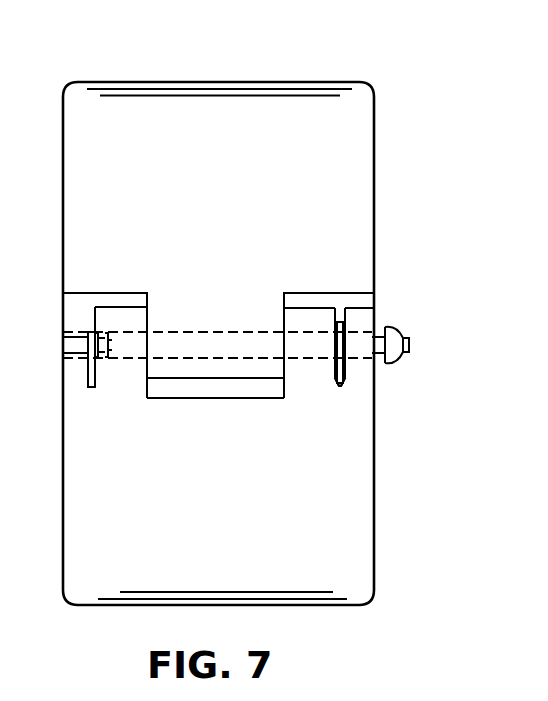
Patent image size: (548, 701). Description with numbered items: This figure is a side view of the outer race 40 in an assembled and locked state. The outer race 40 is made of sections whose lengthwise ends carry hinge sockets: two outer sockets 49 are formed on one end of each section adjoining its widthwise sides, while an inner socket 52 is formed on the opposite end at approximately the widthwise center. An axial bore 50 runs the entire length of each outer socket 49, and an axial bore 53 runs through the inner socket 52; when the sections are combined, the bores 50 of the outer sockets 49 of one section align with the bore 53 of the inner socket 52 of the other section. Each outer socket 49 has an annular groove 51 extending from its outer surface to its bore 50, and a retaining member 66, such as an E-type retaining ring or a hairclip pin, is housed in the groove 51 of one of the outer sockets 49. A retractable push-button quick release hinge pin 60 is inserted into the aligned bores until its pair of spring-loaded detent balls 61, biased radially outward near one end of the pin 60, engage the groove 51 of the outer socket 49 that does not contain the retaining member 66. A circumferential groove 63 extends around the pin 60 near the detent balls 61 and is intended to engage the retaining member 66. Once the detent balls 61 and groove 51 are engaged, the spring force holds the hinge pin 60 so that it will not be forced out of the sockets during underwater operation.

The outer race 40 is at (341, 64).
The outer sockets 49 is at (118, 307).
The axial bore 50 is at (84, 357).
The annular groove 51 is at (88, 389).
The inner socket 52 is at (222, 380).
The axial bore 53 is at (203, 332).
The hinge pin 60 is at (396, 366).
The detent balls 61 is at (93, 332).
The circumferential groove 63 is at (101, 360).
The retaining member 66 is at (343, 386).